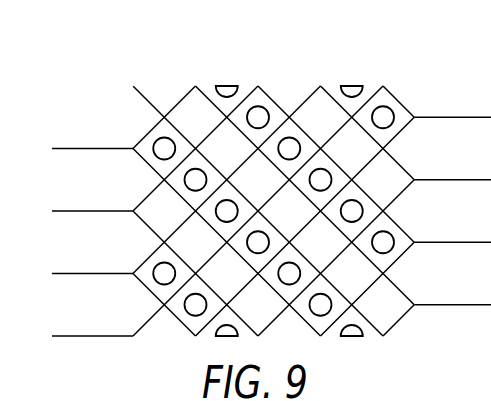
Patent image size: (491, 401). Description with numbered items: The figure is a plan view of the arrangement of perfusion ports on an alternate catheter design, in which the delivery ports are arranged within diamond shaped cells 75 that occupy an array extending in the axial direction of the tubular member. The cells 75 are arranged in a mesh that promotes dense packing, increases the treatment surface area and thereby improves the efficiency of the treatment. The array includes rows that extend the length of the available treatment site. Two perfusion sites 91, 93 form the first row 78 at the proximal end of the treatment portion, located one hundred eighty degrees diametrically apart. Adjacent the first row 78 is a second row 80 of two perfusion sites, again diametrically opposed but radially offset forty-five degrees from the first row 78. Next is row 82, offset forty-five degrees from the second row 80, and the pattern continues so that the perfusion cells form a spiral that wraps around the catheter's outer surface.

The cells 75 is at (297, 133).
The first row 78 is at (163, 83).
The second row 80 is at (195, 82).
The row 82 is at (227, 82).
The perfusion site 91 is at (156, 139).
The perfusion site 93 is at (187, 313).